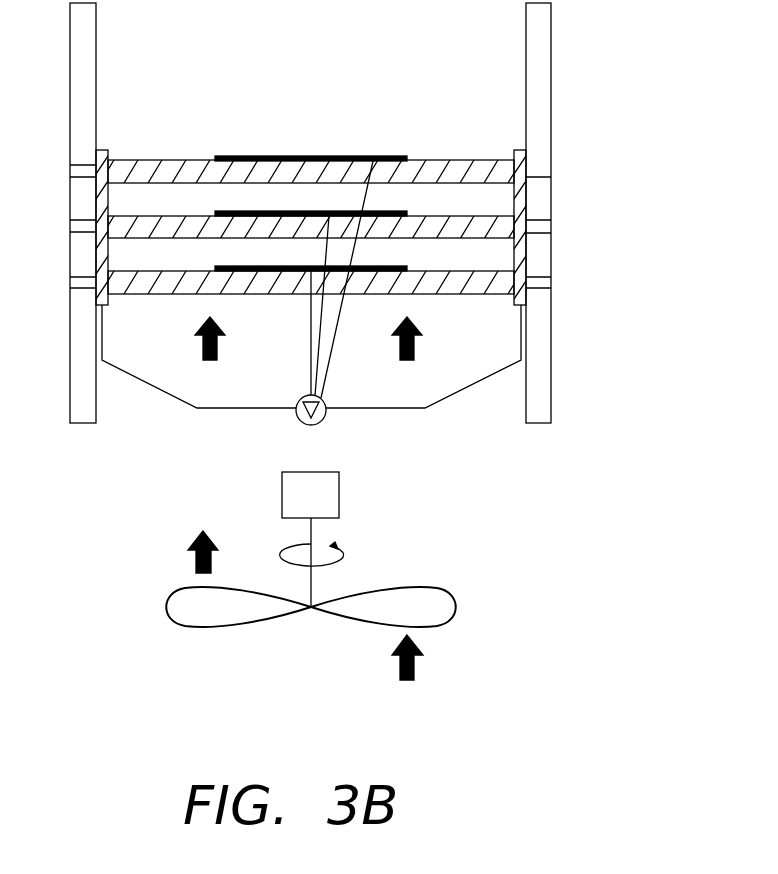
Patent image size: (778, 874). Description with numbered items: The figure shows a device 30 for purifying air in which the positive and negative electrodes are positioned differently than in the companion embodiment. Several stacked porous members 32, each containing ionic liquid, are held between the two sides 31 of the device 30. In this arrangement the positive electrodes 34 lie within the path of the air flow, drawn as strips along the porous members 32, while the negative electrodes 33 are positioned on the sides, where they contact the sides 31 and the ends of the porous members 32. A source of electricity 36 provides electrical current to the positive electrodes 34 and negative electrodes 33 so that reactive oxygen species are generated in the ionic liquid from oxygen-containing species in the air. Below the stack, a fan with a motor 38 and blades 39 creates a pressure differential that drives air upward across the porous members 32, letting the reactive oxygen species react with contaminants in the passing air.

The device 30 is at (337, 230).
The sides 31 is at (84, 381).
The porous member 32 is at (173, 170).
The negative electrode 33 is at (103, 308).
The positive electrode 34 is at (407, 268).
The source of electricity 36 is at (316, 423).
The motor 38 is at (340, 492).
The blades 39 is at (405, 597).